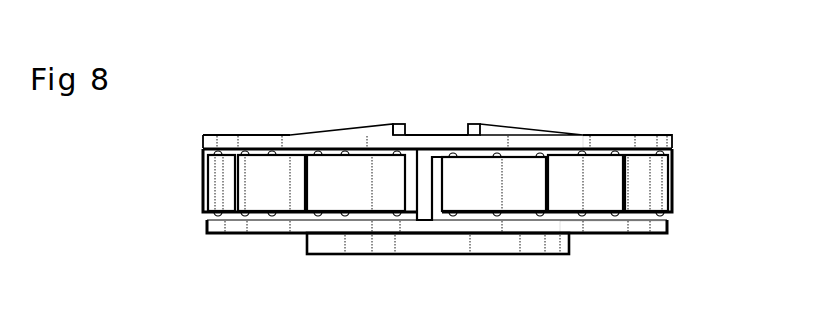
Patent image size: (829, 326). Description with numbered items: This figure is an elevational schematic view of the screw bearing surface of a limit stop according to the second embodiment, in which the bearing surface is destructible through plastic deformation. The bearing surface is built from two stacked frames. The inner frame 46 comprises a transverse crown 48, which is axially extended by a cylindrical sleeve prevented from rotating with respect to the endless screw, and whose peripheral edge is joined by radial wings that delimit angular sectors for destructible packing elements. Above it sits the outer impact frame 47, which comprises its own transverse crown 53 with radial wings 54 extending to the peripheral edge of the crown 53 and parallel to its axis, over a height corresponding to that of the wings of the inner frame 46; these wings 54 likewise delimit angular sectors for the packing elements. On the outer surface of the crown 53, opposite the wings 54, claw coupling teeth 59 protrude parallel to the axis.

The inner frame 46 is at (175, 225).
The outer impact frame 47 is at (180, 140).
The transverse crown 48 is at (637, 226).
The transverse crown 53 is at (628, 142).
The radial wings 54 is at (438, 279).
The claw coupling teeth 59 is at (482, 126).